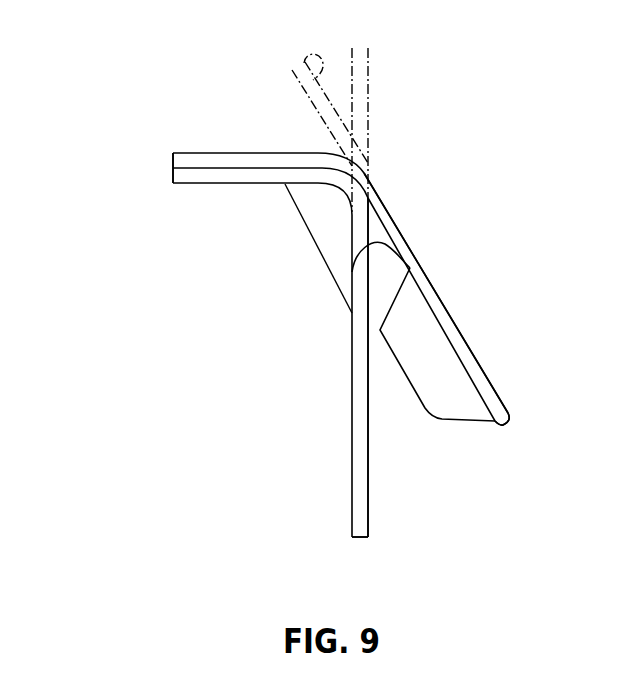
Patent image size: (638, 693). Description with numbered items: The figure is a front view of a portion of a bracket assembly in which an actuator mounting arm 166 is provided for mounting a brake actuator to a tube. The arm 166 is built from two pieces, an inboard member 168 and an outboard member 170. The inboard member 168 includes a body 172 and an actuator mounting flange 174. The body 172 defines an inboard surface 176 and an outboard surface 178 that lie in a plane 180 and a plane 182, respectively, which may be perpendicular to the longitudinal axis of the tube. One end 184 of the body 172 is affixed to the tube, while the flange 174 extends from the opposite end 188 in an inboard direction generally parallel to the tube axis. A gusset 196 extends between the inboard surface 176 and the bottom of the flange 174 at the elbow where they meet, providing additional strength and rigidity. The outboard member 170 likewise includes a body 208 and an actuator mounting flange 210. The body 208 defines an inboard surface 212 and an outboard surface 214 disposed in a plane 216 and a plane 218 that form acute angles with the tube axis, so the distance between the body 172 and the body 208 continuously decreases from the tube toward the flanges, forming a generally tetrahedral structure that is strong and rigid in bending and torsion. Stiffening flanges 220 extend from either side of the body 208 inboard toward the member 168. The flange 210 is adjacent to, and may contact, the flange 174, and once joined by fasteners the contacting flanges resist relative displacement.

The actuator mounting arm 166 is at (127, 109).
The inboard member 168 is at (276, 428).
The outboard member 170 is at (479, 319).
The body 172 is at (360, 530).
The actuator mounting flange 174 is at (182, 175).
The inboard surface 176 is at (352, 473).
The outboard surface 178 is at (368, 497).
The plane 180 is at (352, 60).
The plane 182 is at (368, 85).
The end of body 184 is at (383, 537).
The opposite end of body 188 is at (341, 203).
The gusset 196 is at (352, 248).
The body 208 is at (500, 425).
The actuator mounting flange 210 is at (183, 158).
The inboard surface 212 is at (350, 262).
The outboard surface 214 is at (390, 212).
The plane 216 is at (293, 98).
The plane 218 is at (300, 50).
The stiffening flanges 220 is at (431, 376).